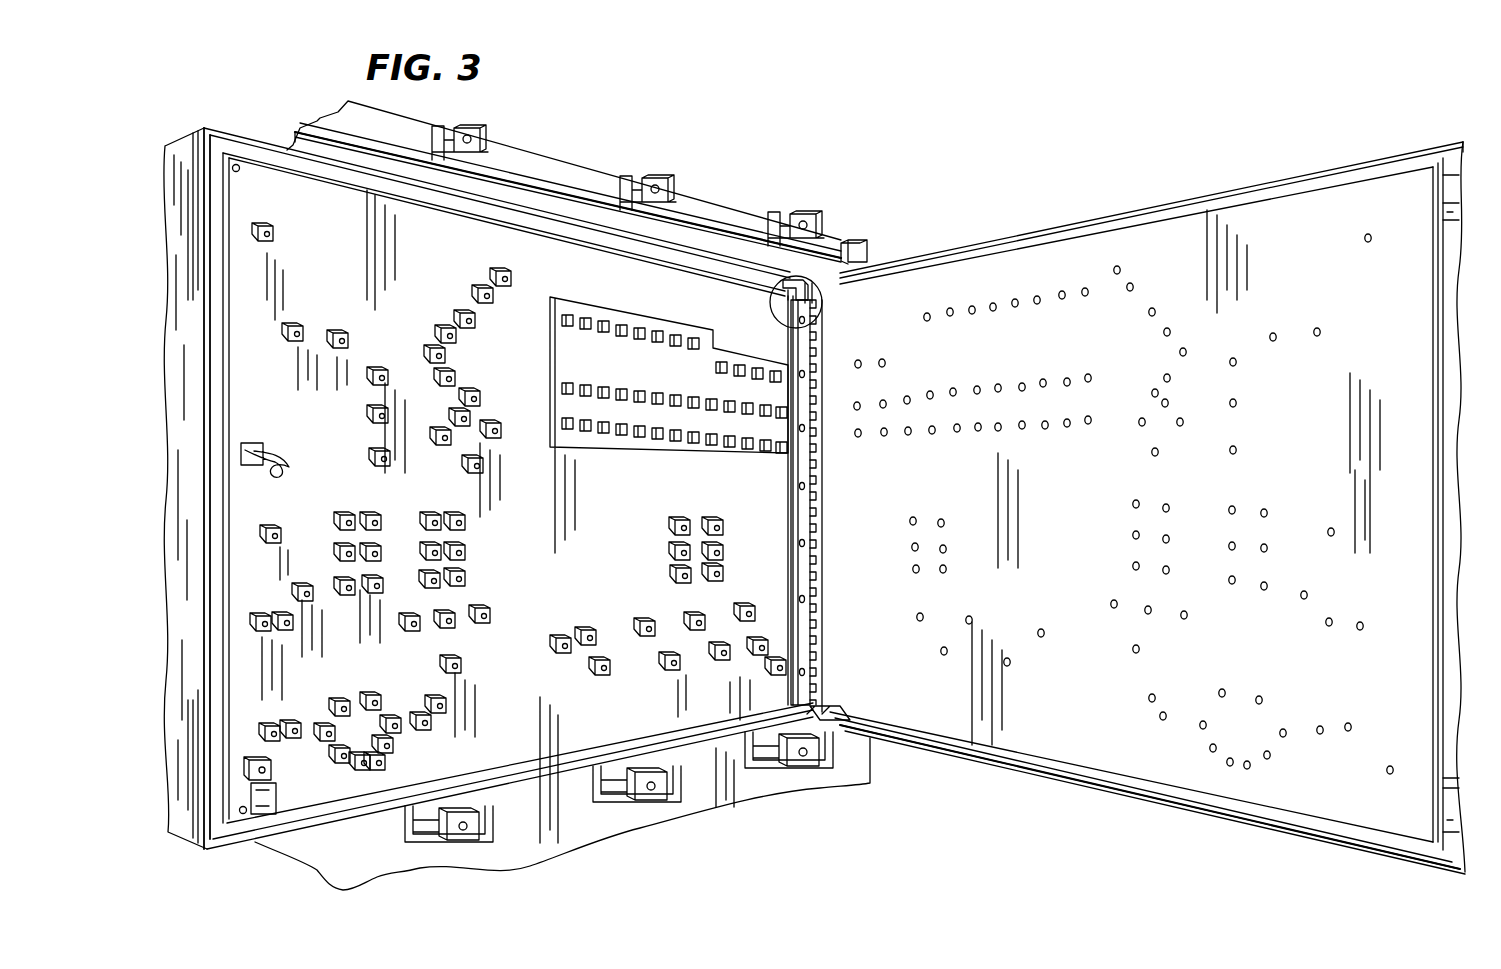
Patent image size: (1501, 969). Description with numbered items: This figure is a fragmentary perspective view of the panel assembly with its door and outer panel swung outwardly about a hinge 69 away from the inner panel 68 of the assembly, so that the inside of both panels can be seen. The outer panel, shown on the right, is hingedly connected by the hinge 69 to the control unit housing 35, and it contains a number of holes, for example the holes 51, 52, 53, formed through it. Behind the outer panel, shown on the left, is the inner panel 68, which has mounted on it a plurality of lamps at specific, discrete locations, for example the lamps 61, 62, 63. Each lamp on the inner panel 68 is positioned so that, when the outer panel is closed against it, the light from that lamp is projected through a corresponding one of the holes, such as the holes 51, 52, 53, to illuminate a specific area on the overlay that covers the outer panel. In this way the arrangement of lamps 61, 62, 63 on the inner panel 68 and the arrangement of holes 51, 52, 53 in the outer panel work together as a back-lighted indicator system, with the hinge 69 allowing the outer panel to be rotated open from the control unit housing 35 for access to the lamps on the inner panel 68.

The control unit housing 35 is at (870, 253).
The hole 51 is at (1009, 666).
The hole 52 is at (1042, 637).
The hole 53 is at (1114, 608).
The lamp 61 is at (597, 675).
The lamp 62 is at (557, 653).
The lamp 63 is at (491, 606).
The inner panel 68 is at (524, 689).
The hinge 69 is at (812, 275).